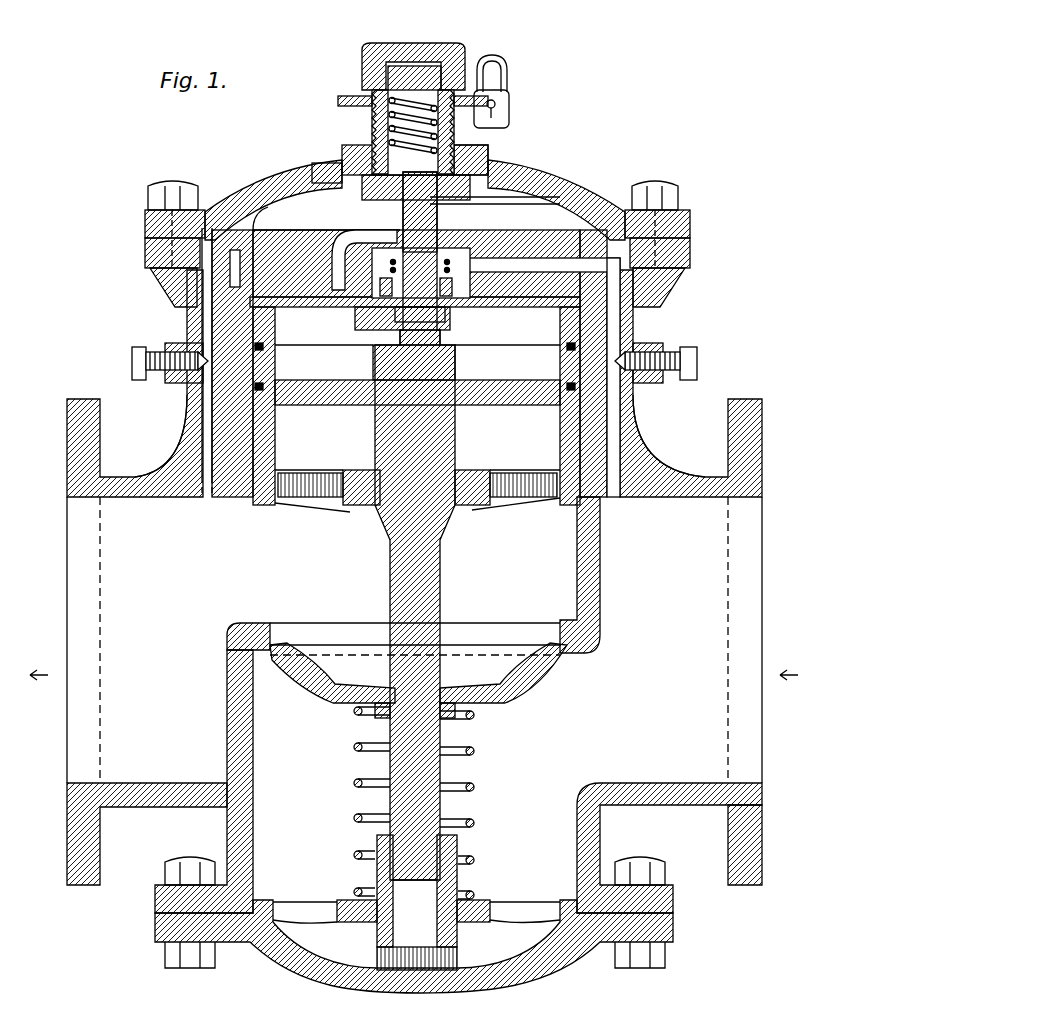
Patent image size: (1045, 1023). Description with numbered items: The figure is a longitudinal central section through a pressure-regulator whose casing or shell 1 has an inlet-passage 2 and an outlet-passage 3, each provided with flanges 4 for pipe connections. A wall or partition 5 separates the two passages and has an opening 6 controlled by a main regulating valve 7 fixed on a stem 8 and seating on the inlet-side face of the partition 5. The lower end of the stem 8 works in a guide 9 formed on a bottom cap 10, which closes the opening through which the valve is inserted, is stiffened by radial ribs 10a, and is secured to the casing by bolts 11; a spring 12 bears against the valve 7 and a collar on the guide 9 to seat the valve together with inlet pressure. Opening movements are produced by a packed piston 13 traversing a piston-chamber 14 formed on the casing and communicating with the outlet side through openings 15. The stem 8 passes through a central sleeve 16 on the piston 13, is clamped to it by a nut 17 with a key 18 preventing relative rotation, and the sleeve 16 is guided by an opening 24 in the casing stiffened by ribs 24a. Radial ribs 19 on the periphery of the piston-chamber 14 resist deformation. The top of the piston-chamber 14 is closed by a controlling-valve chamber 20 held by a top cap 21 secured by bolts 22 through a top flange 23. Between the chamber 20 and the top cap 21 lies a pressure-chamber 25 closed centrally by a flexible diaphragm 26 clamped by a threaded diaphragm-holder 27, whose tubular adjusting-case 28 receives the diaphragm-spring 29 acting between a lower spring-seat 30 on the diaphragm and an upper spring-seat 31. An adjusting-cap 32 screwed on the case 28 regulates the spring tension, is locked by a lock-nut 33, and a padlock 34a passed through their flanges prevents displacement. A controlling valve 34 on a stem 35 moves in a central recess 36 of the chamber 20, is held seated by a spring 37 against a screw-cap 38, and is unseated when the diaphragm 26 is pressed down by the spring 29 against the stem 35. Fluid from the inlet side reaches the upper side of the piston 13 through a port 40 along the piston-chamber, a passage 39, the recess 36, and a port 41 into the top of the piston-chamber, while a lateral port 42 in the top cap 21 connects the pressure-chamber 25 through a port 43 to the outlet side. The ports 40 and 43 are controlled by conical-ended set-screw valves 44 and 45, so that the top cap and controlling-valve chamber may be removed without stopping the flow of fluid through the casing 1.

The casing or shell 1 is at (118, 482).
The inlet-passage 2 is at (745, 640).
The outlet-passage 3 is at (83, 640).
The flanges 4 is at (414, 848).
The wall or partition 5 is at (412, 609).
The opening or passage 6 is at (415, 634).
The main or regulating valve 7 is at (418, 673).
The stem 8 is at (418, 526).
The guide 9 is at (458, 930).
The bottom cap 10 is at (414, 956).
The radial ribs or brackets 10a is at (318, 912).
The bolts 11 is at (670, 845).
The spring 12 is at (470, 787).
The piston 13 is at (480, 400).
The piston chamber or cylinder 14 is at (255, 438).
The openings 15 is at (300, 500).
The central sleeve or tubular extension 16 is at (375, 455).
The nut 17 is at (455, 360).
The key 18 is at (385, 376).
The radial ribs 19 is at (185, 298).
The controlling-valve chamber 20 is at (288, 300).
The top cap 21 is at (283, 192).
The bolts 22 is at (413, 208).
The top flange 23 is at (143, 255).
The opening 24 is at (465, 480).
The ribs or brackets 24a is at (345, 515).
The pressure-chamber 25 is at (326, 215).
The flexible diaphragm 26 is at (470, 197).
The diaphragm-holder 27 is at (480, 160).
The central sleeve or tubular body (adjusting-case) 28 is at (372, 127).
The diaphragm-spring 29 is at (385, 112).
The lower spring-seat 30 is at (350, 152).
The upper spring-seat 31 is at (393, 62).
The adjusting-cap 32 is at (465, 55).
The lock-nut 33 is at (358, 98).
The secondary or controlling valve 34 is at (420, 255).
The padlock 34a is at (510, 105).
The stem 35 is at (395, 199).
The central recess 36 is at (445, 278).
The spring 37 is at (375, 322).
The screw-cap 38 is at (448, 315).
The port or passage 39 is at (525, 288).
The port 40 is at (628, 412).
The port 41 is at (333, 265).
The lateral port 42 is at (240, 215).
The port 43 is at (190, 428).
The valve 44 is at (672, 350).
The valve 45 is at (132, 360).